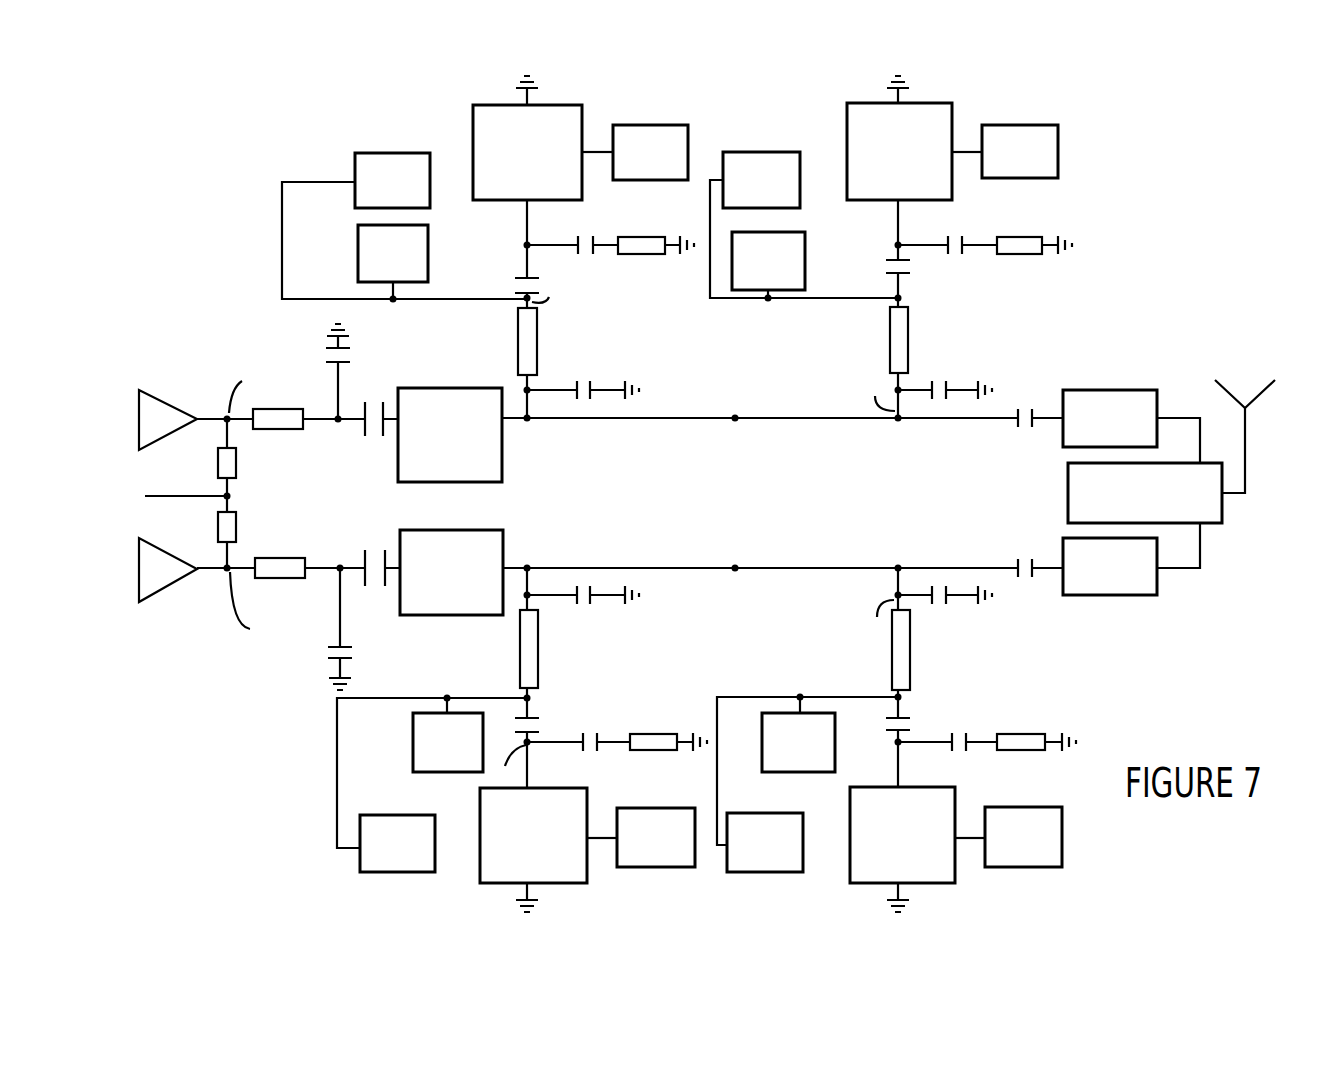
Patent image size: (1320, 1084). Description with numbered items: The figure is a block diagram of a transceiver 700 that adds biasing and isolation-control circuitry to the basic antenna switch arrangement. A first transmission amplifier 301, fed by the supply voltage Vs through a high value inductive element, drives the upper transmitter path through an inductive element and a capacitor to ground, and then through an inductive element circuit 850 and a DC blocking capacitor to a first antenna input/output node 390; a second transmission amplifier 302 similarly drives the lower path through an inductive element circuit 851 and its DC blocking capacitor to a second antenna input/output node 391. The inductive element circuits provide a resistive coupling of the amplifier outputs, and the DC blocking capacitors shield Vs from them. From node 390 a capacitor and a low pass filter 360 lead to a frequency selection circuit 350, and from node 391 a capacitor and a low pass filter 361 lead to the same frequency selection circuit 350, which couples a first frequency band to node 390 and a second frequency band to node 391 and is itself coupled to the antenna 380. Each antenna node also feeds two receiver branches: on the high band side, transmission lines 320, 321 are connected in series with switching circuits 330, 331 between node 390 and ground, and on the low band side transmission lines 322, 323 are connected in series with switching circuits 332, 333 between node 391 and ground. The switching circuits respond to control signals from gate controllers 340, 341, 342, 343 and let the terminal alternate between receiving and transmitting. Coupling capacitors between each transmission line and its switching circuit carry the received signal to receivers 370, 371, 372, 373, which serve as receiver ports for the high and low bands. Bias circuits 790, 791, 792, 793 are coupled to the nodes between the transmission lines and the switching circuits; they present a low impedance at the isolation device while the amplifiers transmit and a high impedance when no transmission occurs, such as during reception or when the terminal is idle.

The transceiver 700 is at (245, 192).
The first transmission amplifier 301 is at (155, 393).
The second transmission amplifier 302 is at (150, 596).
The transmission line 320 is at (537, 366).
The transmission line 321 is at (908, 351).
The transmission line 322 is at (538, 626).
The transmission line 323 is at (910, 648).
The switching circuit 330 is at (527, 160).
The switching circuit 331 is at (899, 160).
The switching circuit 332 is at (533, 850).
The switching circuit 333 is at (902, 849).
The gate controller 340 is at (625, 125).
The gate controller 341 is at (1058, 152).
The gate controller 342 is at (635, 867).
The gate controller 343 is at (1062, 840).
The frequency selection circuit 350 is at (1068, 513).
The low pass filter 360 is at (1147, 390).
The low pass filter 361 is at (1153, 586).
The receiver 370 is at (358, 251).
The receiver 371 is at (756, 292).
The receiver 372 is at (413, 742).
The receiver 373 is at (792, 772).
The antenna 380 is at (1245, 381).
The first antenna input/output node 390 is at (782, 432).
The second antenna input/output node 391 is at (783, 572).
The bias circuit 790 is at (372, 153).
The bias circuit 791 is at (740, 152).
The bias circuit 792 is at (375, 872).
The bias circuit 793 is at (745, 872).
The inductive element circuit 850 is at (447, 388).
The inductive element circuit 851 is at (447, 530).